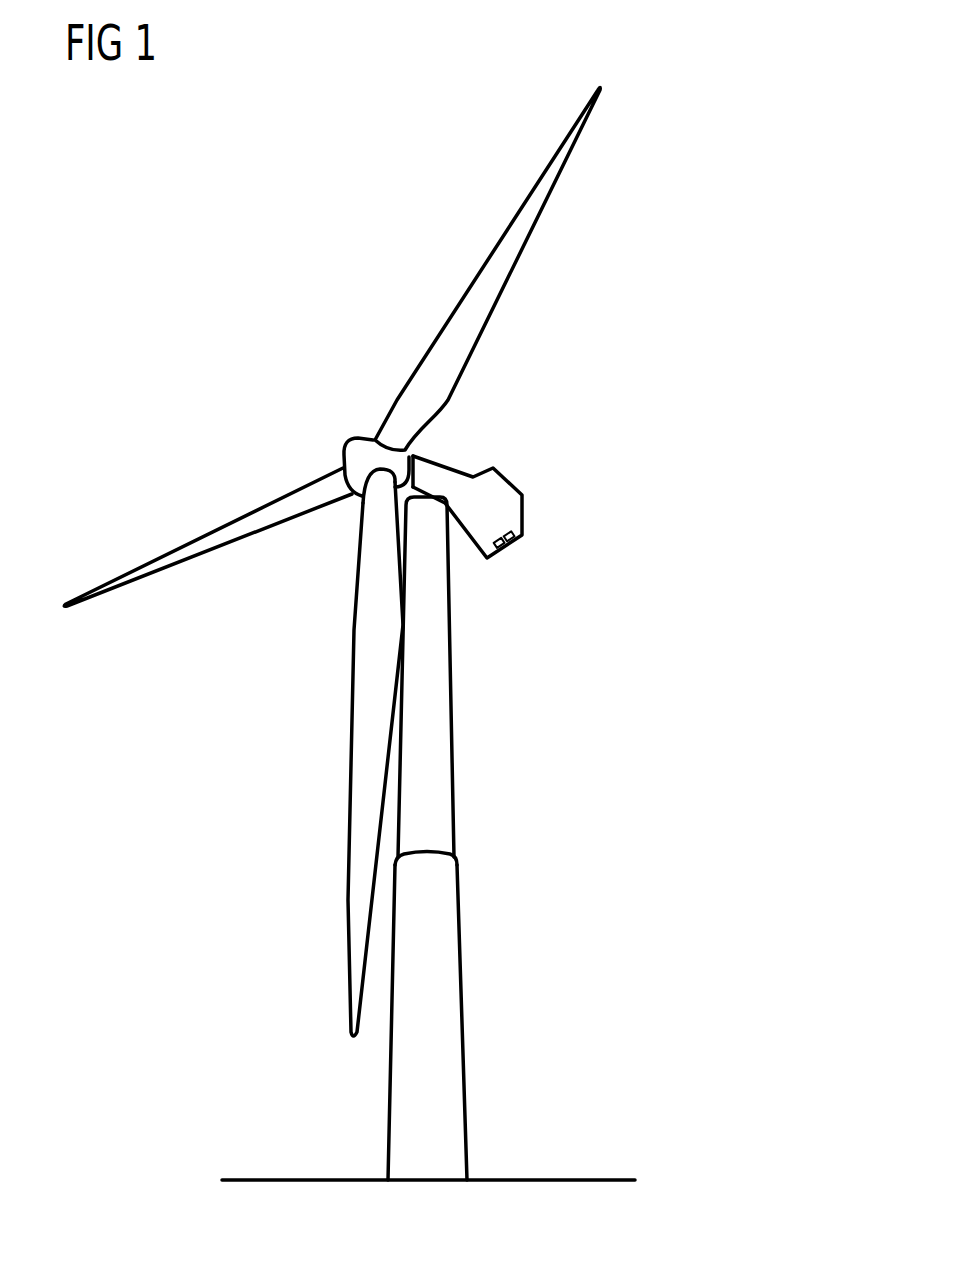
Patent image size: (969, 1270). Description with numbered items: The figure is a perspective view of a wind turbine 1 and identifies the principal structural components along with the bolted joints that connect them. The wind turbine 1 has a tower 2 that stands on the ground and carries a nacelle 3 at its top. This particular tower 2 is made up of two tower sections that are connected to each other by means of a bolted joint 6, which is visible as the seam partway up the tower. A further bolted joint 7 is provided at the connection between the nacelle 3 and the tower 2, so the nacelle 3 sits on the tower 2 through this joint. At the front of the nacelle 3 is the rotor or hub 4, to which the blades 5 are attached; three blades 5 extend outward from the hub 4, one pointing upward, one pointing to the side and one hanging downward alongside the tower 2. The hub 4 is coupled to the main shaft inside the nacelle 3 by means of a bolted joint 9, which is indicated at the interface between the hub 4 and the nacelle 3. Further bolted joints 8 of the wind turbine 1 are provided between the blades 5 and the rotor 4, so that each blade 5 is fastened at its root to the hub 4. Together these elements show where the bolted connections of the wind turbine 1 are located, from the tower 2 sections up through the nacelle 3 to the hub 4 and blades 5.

The wind turbine 1 is at (624, 266).
The tower 2 is at (454, 1032).
The nacelle 3 is at (512, 513).
The rotor or hub 4 is at (341, 459).
The blades 5 is at (532, 192).
The bolted joint 6 is at (441, 851).
The bolted joint 7 is at (439, 502).
The bolted joints 8 is at (362, 500).
The bolted joint 9 is at (426, 458).